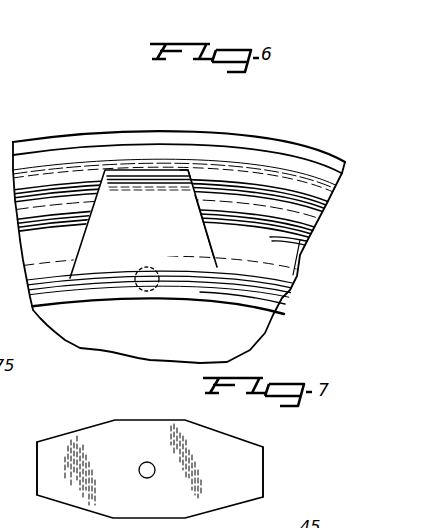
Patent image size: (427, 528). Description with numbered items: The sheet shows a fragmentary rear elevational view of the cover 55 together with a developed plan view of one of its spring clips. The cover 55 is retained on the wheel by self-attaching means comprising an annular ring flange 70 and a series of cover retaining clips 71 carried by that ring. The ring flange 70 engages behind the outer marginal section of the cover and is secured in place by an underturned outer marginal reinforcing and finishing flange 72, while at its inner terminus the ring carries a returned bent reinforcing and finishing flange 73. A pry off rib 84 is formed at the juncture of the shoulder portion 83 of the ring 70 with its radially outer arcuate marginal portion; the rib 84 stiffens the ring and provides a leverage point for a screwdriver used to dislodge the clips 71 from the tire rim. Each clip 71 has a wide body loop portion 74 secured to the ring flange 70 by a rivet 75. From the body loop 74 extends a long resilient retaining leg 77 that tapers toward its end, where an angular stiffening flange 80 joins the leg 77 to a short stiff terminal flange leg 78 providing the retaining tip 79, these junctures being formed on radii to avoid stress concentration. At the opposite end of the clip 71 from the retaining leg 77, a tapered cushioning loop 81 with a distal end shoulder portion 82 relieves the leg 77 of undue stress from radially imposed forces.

In FIG. 6, the cover 55 is at (300, 283).
In FIG. 6, the ring flange 70 is at (278, 283).
In FIG. 6, the cover retaining clip 71 is at (220, 262).
In FIG. 7, the cover retaining clip 71 is at (174, 411).
In FIG. 6, the outer marginal reinforcing and finishing flange 72 is at (281, 148).
In FIG. 6, the returned bent reinforcing and finishing flange 73 is at (267, 304).
In FIG. 7, the body loop portion 74 is at (135, 432).
In FIG. 6, the rivet 75 is at (155, 296).
In FIG. 6, the resilient retaining leg 77 is at (206, 226).
In FIG. 7, the resilient retaining leg 77 is at (74, 440).
In FIG. 6, the terminal flange leg 78 is at (152, 172).
In FIG. 6, the retaining tip 79 is at (186, 164).
In FIG. 7, the retaining tip 79 is at (37, 458).
In FIG. 6, the stiffening flange 80 is at (205, 179).
In FIG. 7, the cushioning loop 81 is at (235, 445).
In FIG. 7, the distal end shoulder portion 82 is at (266, 450).
In FIG. 6, the shoulder portion 83 is at (278, 263).
In FIG. 6, the pry off rib 84 is at (300, 241).